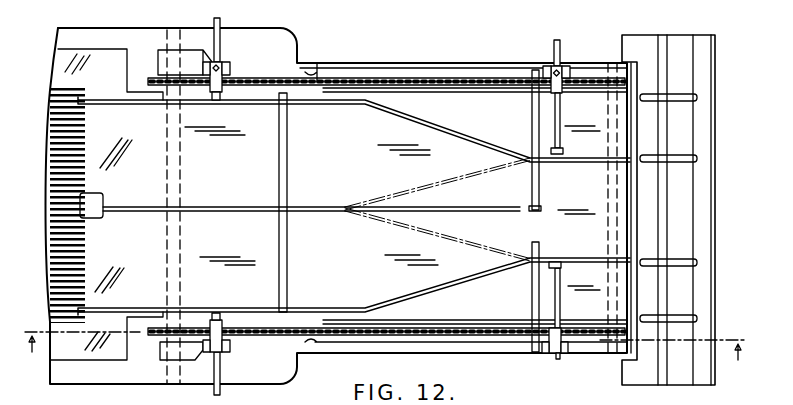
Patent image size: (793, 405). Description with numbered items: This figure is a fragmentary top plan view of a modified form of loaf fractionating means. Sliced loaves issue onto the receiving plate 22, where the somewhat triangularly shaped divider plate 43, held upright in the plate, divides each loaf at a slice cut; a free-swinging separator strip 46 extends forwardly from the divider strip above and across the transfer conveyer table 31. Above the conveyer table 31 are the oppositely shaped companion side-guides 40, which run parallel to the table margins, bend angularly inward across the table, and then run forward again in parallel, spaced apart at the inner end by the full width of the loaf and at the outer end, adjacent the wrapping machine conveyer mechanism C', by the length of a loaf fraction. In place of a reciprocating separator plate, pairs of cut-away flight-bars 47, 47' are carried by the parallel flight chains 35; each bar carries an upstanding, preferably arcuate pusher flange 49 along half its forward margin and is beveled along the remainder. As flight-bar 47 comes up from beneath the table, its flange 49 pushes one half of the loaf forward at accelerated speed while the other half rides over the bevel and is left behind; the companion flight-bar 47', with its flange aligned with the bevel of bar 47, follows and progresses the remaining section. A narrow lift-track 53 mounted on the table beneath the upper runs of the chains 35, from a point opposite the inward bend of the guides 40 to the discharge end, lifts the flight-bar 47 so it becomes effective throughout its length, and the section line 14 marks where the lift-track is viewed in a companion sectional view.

The section line 14- 14 is at (384, 358).
The receiving plate 22 is at (136, 250).
The transfer conveyer table 31 is at (520, 121).
The flight chains 35 is at (478, 86).
The side-guides 40 is at (386, 123).
The divider plate 43 is at (122, 208).
The separator strip 46 is at (446, 206).
The cut-away flight-bar 47 is at (553, 211).
The companion flight-bar 47' is at (307, 202).
The upstanding flange 49 is at (557, 150).
The lift-track 53 is at (431, 98).
The wrapping machine conveyer mechanism C' is at (691, 210).